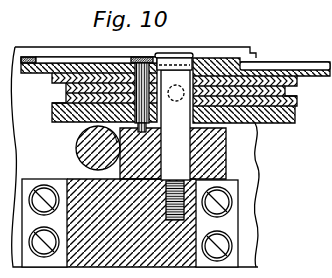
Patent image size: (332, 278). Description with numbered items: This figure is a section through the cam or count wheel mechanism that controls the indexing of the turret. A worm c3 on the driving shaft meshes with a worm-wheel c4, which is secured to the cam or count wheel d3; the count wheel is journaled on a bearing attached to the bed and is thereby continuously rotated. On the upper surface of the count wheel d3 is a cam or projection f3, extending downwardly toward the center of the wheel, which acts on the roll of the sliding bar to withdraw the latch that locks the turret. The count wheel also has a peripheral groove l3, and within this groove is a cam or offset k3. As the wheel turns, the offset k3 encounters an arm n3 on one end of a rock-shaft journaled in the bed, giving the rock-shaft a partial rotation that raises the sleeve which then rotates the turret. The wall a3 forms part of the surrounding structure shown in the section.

The cam or projection f3 is at (35, 58).
The cam or offset k3 is at (50, 98).
The arm n3 is at (180, 102).
The worm c3 is at (78, 147).
The worm-wheel c4 is at (228, 128).
The cam or count wheel d3 is at (290, 51).
The peripheral groove l3 is at (288, 98).
The casing wall a3 is at (262, 123).